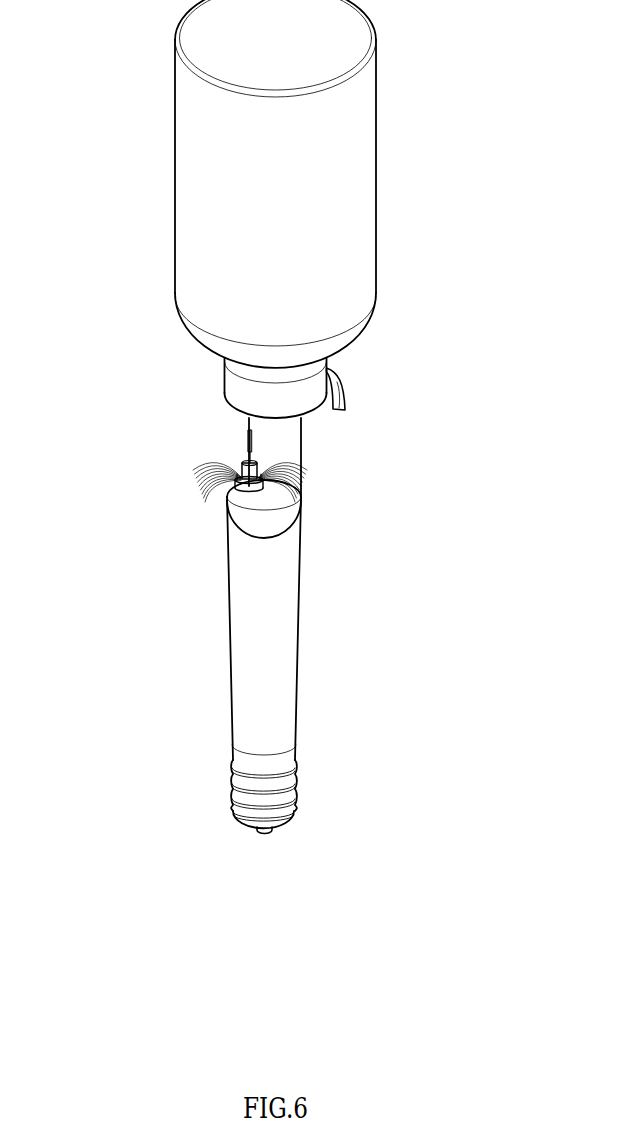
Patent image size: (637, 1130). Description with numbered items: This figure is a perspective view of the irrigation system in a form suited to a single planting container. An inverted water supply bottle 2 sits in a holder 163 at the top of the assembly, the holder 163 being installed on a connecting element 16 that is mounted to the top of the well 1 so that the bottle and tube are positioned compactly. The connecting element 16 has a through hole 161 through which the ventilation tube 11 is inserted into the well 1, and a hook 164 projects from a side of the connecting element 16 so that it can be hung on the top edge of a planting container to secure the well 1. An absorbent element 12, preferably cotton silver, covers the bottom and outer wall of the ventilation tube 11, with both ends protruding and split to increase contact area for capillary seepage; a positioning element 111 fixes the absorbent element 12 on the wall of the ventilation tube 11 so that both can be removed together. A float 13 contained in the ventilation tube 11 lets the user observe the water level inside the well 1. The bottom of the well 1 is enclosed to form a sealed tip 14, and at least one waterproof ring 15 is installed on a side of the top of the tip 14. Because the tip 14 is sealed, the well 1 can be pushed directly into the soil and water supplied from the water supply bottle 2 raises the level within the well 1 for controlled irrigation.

The well 1 is at (243, 633).
The water supply bottle 2 is at (185, 190).
The ventilation tube 11 is at (251, 483).
The absorbent element 12 is at (198, 481).
The float 13 is at (248, 441).
The tip 14 is at (263, 834).
The waterproof ring 15 is at (234, 771).
The connecting element 16 is at (285, 438).
The positioning element 111 is at (246, 488).
The through hole 161 is at (236, 484).
The holder 163 is at (303, 369).
The hook 164 is at (338, 392).